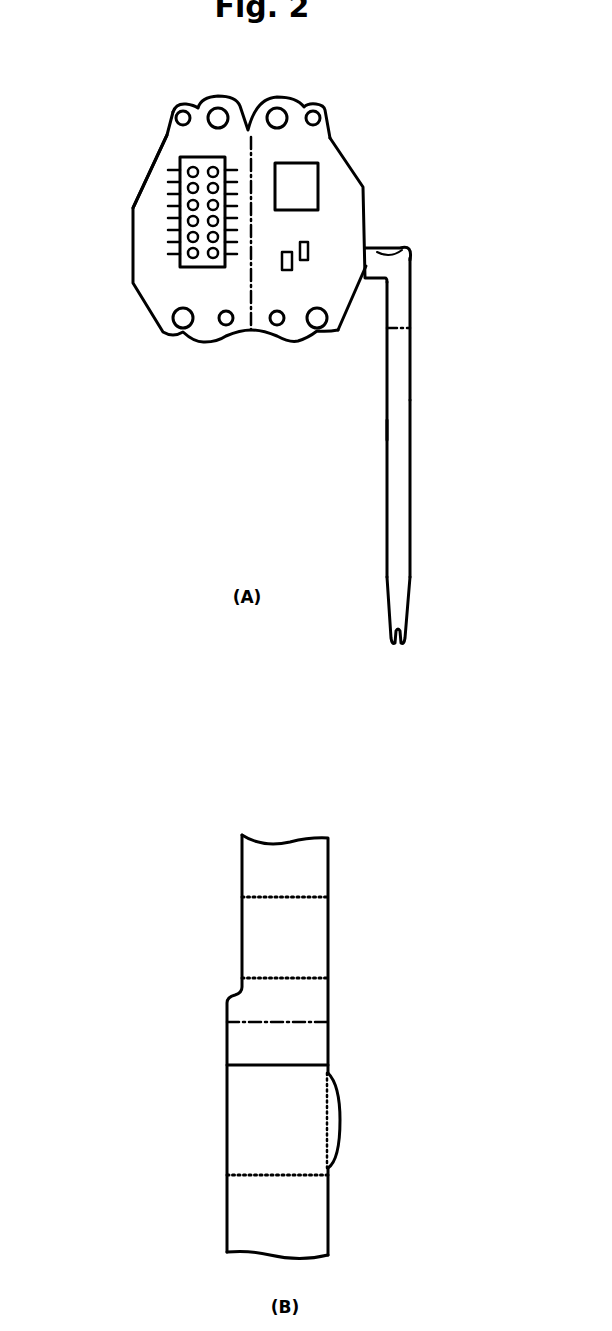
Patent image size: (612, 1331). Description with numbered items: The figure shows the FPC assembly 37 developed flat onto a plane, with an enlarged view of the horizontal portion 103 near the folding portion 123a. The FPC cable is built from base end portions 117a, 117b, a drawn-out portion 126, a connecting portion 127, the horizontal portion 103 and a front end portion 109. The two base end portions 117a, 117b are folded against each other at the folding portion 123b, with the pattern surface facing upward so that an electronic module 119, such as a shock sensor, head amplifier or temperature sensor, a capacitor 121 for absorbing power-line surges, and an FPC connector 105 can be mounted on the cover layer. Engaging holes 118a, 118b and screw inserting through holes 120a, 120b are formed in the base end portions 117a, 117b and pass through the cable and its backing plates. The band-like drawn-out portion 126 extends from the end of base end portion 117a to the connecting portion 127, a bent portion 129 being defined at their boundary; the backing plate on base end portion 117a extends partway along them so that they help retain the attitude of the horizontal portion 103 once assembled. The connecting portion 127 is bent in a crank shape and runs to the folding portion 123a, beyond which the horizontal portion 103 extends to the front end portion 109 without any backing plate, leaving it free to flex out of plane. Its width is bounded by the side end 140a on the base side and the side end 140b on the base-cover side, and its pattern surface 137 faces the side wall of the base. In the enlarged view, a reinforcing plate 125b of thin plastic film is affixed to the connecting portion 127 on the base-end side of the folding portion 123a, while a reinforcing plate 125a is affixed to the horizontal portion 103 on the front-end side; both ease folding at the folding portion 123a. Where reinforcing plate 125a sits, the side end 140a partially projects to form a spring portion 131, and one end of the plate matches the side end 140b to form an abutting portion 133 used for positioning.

The FPC assembly 37 is at (165, 393).
The horizontal portion 103 is at (306, 758).
The FPC connector 105 is at (178, 251).
The front end portion 109 is at (413, 607).
The base end portion 117a is at (345, 212).
The base end portion 117b is at (157, 192).
The engaging hole 118a is at (178, 112).
The engaging hole 118b is at (224, 326).
The electronic module 119 is at (303, 180).
The screw inserting through hole 120a is at (165, 331).
The screw inserting through hole 120b is at (218, 108).
The capacitor 121 is at (304, 266).
The folding portion 123a is at (390, 328).
The folding portion 123b is at (254, 152).
The reinforcing plate 125a is at (256, 1157).
The reinforcing plate 125b is at (297, 950).
The drawn-out portion 126 is at (365, 292).
The connecting portion 127 is at (411, 280).
The bent portion 129 is at (403, 245).
The spring portion 131 is at (342, 1130).
The abutting portion 133 is at (227, 1100).
The pattern surface 137 is at (397, 430).
The side end 140a is at (409, 490).
The side end 140b is at (387, 490).